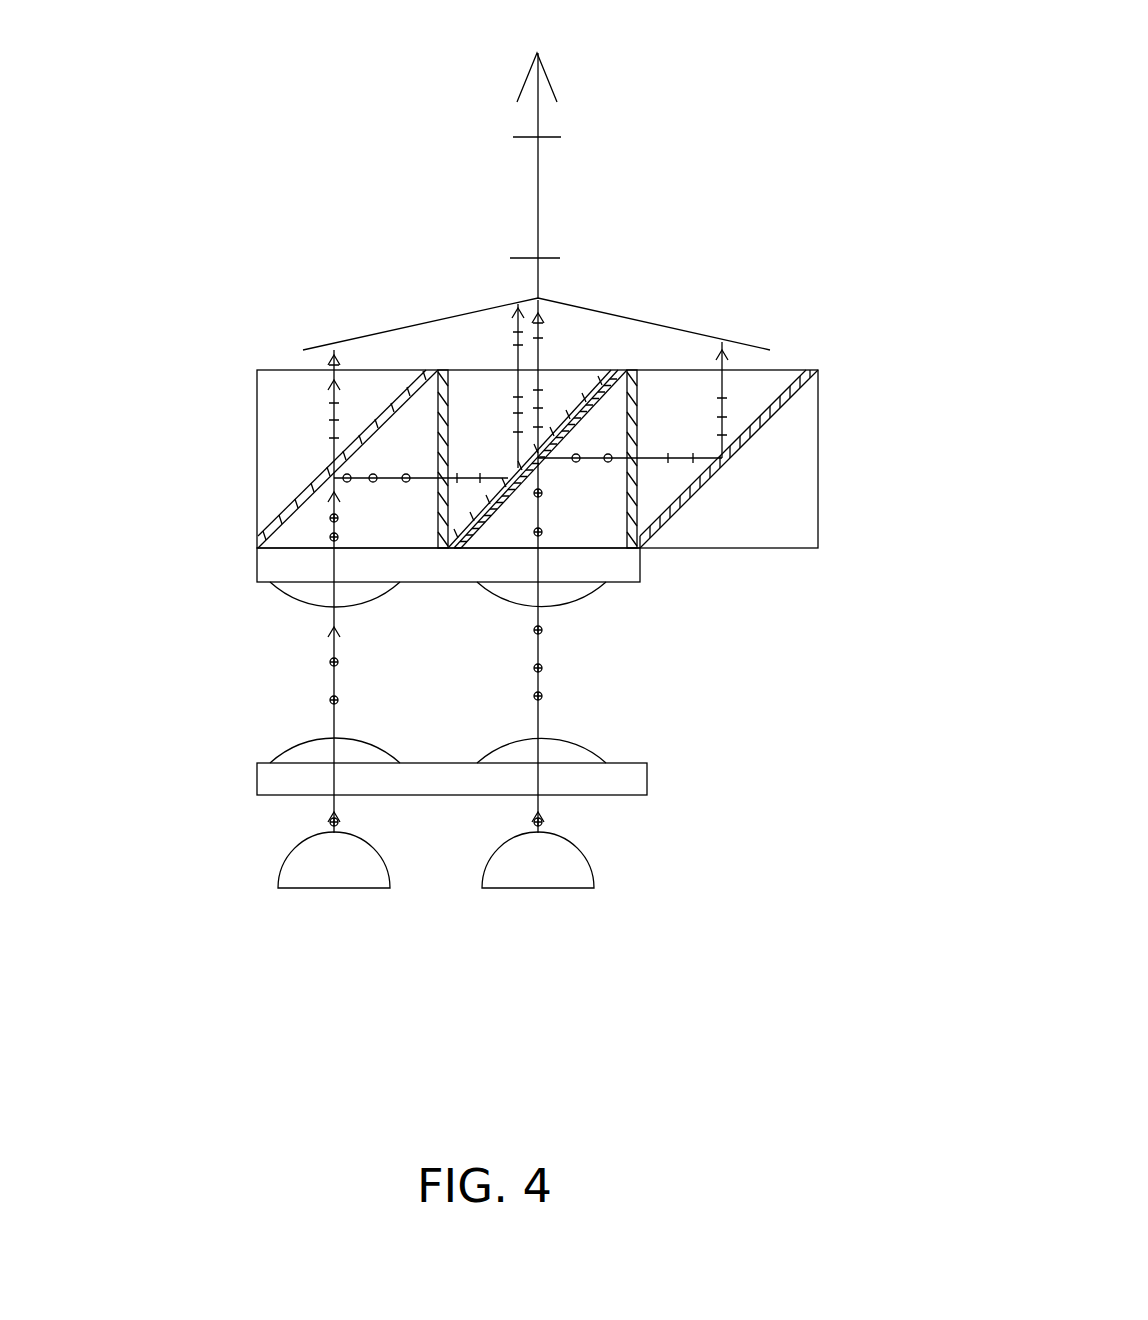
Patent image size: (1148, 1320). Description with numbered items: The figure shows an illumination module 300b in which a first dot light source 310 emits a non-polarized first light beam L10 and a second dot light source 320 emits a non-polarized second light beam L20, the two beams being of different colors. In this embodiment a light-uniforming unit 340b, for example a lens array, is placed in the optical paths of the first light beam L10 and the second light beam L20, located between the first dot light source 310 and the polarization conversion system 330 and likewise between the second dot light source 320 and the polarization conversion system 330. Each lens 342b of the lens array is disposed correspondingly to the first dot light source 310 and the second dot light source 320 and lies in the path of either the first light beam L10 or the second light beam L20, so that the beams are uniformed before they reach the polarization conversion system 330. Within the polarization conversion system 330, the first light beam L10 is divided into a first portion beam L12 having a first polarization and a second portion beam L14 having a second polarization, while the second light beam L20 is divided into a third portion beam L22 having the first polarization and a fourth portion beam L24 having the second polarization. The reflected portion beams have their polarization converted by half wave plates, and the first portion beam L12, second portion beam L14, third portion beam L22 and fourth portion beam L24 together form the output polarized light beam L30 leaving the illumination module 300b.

The illumination module 300b is at (487, 521).
The first dot light source 310 is at (543, 868).
The second dot light source 320 is at (330, 868).
The polarization conversion system 330 is at (172, 464).
The light-uniforming unit 340b is at (563, 671).
The lens 342b is at (558, 750).
The first light beam L10 is at (533, 812).
The first portion beam L12 is at (593, 457).
The second portion beam L14 is at (538, 398).
The second light beam L20 is at (335, 813).
The third portion beam L22 is at (337, 510).
The fourth portion beam L24 is at (327, 394).
The polarized light beam L30 is at (538, 187).